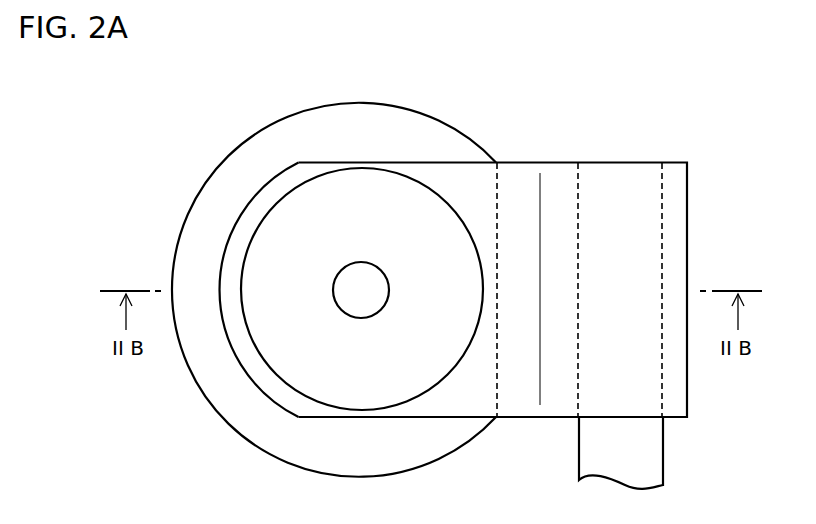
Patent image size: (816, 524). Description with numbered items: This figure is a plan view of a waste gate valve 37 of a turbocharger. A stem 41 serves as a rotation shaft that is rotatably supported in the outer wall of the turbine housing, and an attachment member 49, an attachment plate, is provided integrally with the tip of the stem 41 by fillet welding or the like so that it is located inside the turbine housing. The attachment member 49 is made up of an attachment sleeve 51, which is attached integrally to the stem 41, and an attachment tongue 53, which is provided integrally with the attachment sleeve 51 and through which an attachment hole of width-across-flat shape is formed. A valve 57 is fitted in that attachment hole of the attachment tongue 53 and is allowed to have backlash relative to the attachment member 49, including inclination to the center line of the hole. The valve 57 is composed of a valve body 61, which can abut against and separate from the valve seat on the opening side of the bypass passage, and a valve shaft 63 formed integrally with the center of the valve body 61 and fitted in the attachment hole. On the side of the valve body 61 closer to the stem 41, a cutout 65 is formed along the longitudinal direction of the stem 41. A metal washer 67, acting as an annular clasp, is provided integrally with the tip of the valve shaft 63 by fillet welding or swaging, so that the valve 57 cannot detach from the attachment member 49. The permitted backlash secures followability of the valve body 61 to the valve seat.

The waste gate valve 37 is at (437, 101).
The stem 41 is at (649, 452).
The attachment member 49 is at (623, 90).
The attachment sleeve 51 is at (608, 173).
The attachment tongue 53 is at (520, 173).
The valve 57 is at (308, 62).
The valve body 61 is at (250, 170).
The valve shaft 63 is at (359, 263).
The cutout 65 is at (497, 370).
The metal washer 67 is at (300, 375).